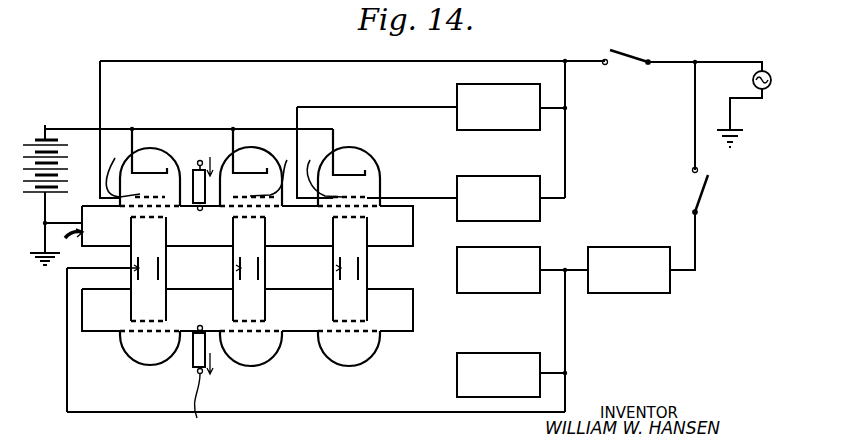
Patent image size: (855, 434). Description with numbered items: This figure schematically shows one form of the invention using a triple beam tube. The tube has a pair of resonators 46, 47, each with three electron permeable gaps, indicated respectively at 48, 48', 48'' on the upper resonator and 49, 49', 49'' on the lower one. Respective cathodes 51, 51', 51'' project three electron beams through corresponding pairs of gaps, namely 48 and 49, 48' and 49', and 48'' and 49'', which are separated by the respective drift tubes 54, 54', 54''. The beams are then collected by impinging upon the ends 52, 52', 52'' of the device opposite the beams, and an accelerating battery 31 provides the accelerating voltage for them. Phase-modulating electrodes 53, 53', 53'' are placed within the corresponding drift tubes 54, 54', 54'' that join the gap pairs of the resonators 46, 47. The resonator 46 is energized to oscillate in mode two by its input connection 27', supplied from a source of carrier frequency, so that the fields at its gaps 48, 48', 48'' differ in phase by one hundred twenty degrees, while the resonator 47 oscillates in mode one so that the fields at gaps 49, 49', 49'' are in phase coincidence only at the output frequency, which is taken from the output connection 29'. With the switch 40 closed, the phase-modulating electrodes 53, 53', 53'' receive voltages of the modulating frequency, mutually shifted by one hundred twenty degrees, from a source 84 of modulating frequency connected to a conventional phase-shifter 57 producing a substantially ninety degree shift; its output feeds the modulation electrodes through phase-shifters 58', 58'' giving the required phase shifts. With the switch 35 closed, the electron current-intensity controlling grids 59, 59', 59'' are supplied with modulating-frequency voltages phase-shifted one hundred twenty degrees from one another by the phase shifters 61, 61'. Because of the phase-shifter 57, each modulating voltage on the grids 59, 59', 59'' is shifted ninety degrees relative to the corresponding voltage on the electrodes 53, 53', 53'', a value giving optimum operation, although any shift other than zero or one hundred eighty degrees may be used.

The accelerating battery 31 is at (77, 167).
The switch 35 is at (637, 53).
The switch 40 is at (703, 197).
The resonator 46 is at (82, 216).
The resonator 47 is at (82, 313).
The electron permeable gap 48 is at (129, 267).
The electron permeable gap 48' is at (227, 266).
The electron permeable gap 48'' is at (331, 269).
The electron permeable gap 49 is at (130, 342).
The electron permeable gap 49' is at (250, 360).
The electron permeable gap 49'' is at (371, 346).
The cathode 51 is at (153, 154).
The cathode 51' is at (251, 157).
The cathode 51'' is at (359, 166).
The end of the device 52 is at (146, 361).
The end of the device 52' is at (255, 364).
The end of the device 52'' is at (349, 364).
The phase-modulating electrode 53 is at (165, 265).
The phase-modulating electrode 53' is at (271, 265).
The phase-modulating electrode 53'' is at (373, 266).
The drift tube 54 is at (183, 274).
The drift tube 54' is at (294, 272).
The drift tube 54'' is at (386, 274).
The phase-shifter 57 is at (635, 247).
The phase-shifter 58' is at (498, 361).
The phase-shifter 58'' is at (498, 259).
The electron current-intensity controlling grid 59 is at (123, 167).
The electron current-intensity controlling grid 59' is at (270, 168).
The electron current-intensity controlling grid 59'' is at (321, 169).
The phase shifter 61 is at (498, 81).
The phase shifter 61' is at (498, 185).
The input connection 27' is at (197, 173).
The output connection 29' is at (203, 380).
The source of modulating frequency 84 is at (770, 68).